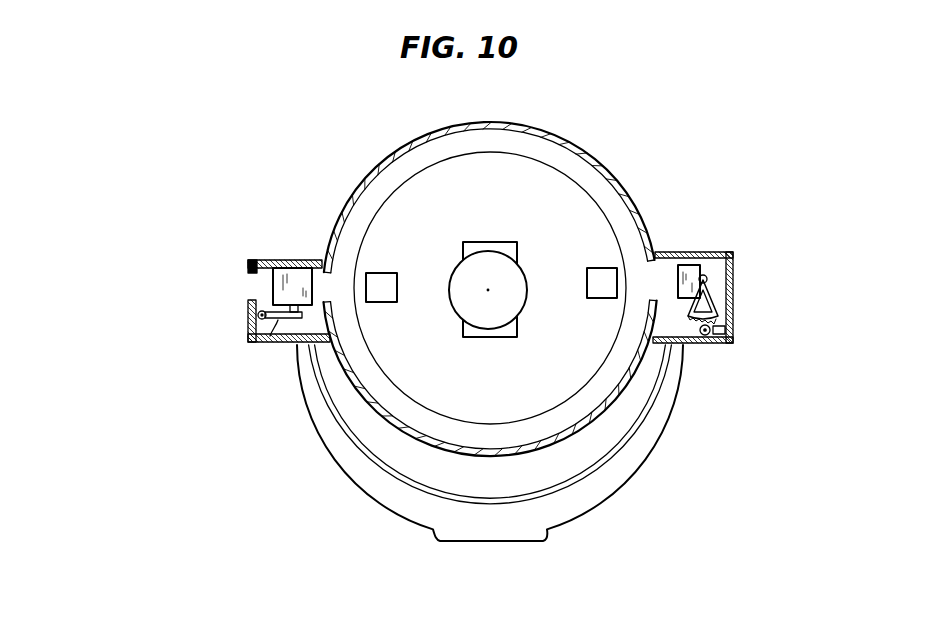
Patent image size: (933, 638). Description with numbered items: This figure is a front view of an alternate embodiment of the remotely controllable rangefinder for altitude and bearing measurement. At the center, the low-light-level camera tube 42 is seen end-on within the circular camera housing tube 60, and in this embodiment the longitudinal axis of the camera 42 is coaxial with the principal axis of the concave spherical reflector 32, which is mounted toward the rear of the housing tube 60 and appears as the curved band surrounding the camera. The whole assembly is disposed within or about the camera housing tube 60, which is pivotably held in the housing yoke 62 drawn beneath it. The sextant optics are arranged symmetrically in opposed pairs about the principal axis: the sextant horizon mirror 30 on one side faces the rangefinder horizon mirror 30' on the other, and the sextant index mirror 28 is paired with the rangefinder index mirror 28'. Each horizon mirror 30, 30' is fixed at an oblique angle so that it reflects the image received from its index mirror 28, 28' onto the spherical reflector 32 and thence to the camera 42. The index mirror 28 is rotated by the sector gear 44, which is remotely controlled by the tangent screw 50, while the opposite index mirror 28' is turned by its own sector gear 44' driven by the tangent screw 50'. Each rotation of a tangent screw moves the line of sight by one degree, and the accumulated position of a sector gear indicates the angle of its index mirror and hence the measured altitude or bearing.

The horizon mirror 30' is at (282, 217).
The index mirror 28' is at (182, 263).
The tangent screw 50' is at (200, 313).
The sector gear 44' is at (189, 355).
The low-light-level camera tube 42 is at (561, 232).
The camera housing tube 60 is at (365, 398).
The sextant horizon mirror 30 is at (728, 213).
The sextant index mirror 28 is at (756, 242).
The sector gear 44 is at (789, 292).
The tangent screw 50 is at (803, 342).
The concave spherical reflector 32 is at (657, 383).
The yoke 62 is at (635, 468).